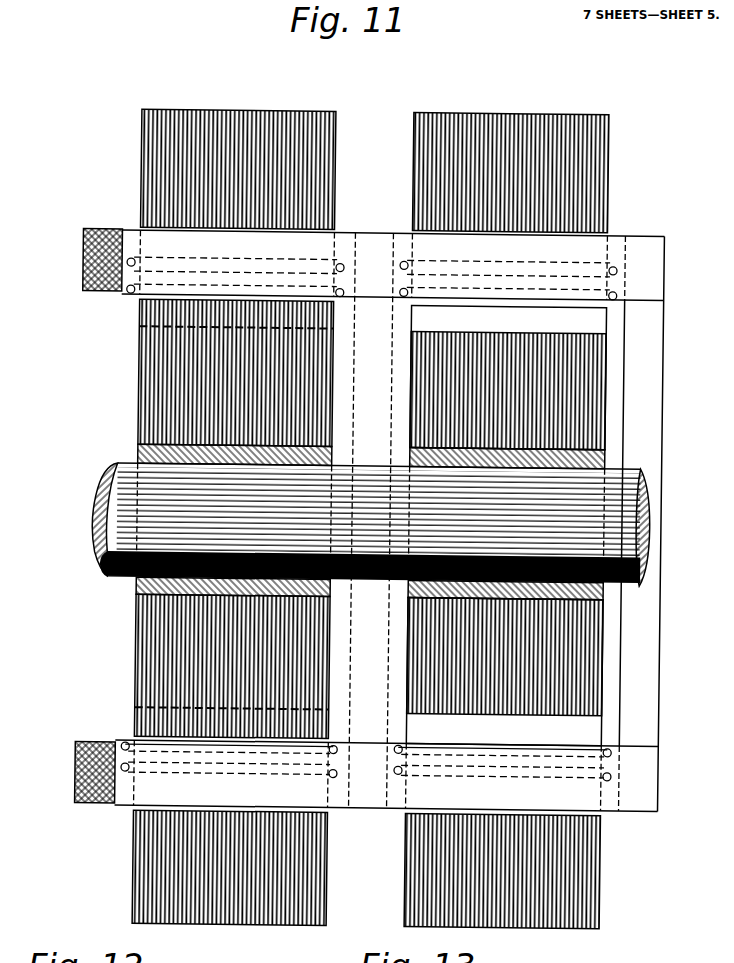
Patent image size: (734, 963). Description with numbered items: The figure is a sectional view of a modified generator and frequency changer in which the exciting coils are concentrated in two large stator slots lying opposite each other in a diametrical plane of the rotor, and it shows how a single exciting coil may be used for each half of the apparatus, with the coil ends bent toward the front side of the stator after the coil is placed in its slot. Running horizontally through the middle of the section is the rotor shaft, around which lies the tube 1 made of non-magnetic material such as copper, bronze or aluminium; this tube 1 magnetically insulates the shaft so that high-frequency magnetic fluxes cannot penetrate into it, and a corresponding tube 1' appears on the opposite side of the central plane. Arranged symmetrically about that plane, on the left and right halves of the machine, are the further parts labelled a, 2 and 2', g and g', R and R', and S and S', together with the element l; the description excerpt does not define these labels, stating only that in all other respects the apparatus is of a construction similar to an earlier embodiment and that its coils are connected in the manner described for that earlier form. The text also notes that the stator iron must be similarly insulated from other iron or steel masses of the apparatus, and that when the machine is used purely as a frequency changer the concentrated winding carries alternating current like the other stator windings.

The end cap / frame member a is at (96, 238).
The spring (left) 2 is at (208, 517).
The spring (right) 2' is at (482, 507).
The tube 1 is at (192, 519).
The spring bar (right) 1' is at (484, 534).
The clamping block (left) g is at (203, 508).
The clamping block (right) g' is at (479, 514).
The shaft l is at (137, 453).
The lower block (left) R is at (198, 657).
The lower block (right) R' is at (478, 662).
The bottom block (left) S is at (199, 867).
The bottom block (right) S' is at (476, 870).